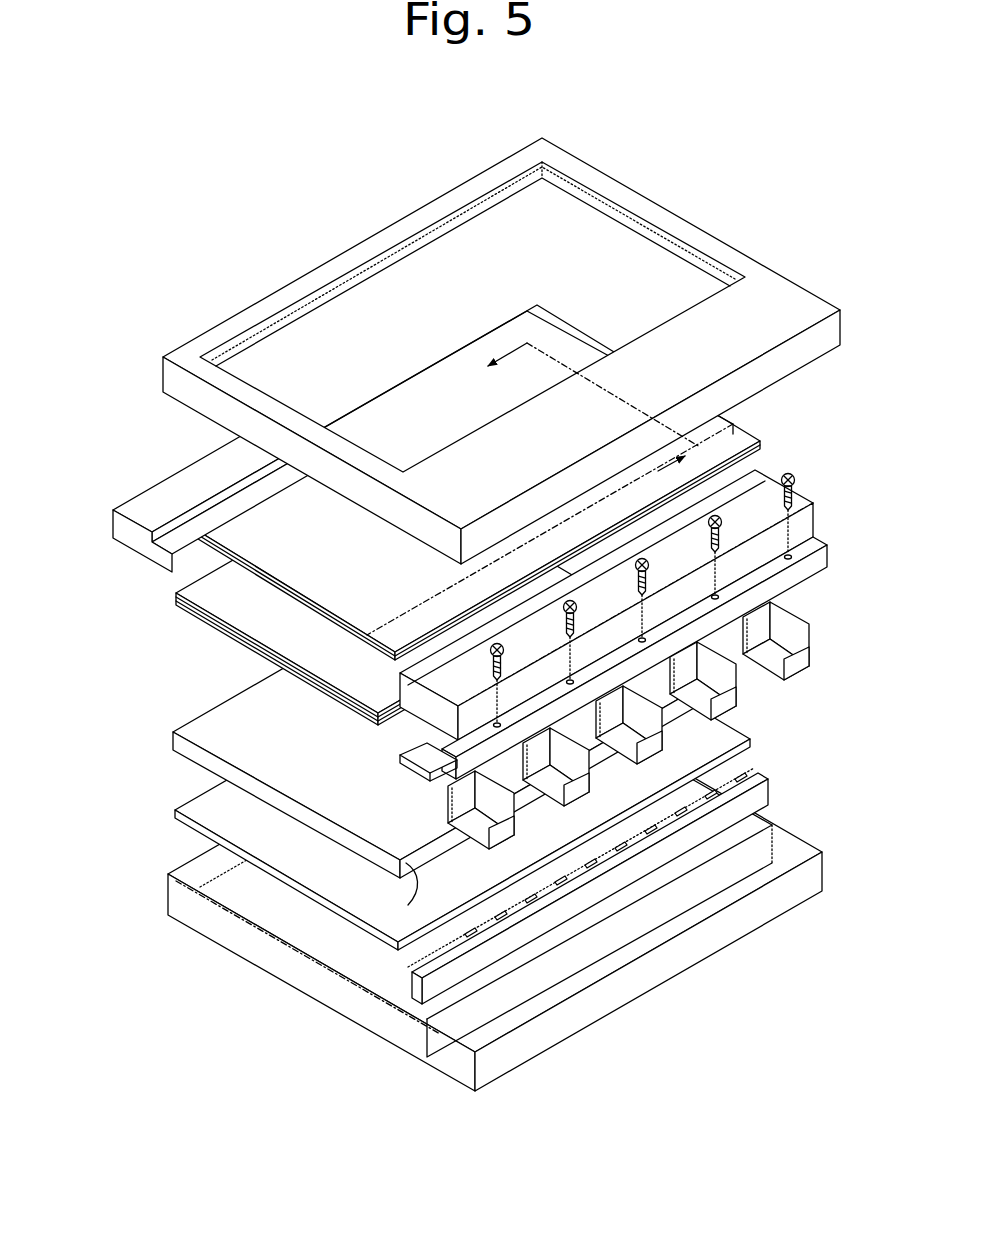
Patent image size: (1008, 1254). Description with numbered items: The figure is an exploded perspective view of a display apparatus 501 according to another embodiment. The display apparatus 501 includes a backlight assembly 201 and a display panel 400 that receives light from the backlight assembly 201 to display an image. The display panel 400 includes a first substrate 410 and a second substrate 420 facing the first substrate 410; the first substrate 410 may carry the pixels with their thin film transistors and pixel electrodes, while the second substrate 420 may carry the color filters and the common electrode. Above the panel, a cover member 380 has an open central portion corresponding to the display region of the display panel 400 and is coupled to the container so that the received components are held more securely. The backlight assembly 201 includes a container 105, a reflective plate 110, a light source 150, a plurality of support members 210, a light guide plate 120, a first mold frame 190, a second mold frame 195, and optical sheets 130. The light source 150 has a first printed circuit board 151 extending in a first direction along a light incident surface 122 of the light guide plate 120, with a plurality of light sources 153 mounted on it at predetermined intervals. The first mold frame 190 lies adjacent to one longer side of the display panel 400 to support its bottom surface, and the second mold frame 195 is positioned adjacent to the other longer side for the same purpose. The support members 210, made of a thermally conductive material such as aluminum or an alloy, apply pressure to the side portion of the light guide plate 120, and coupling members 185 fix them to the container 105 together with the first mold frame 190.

The display apparatus 501 is at (470, 605).
The cover member 380 is at (240, 318).
The display panel 400 is at (534, 482).
The first substrate 410 is at (745, 441).
The second substrate 420 is at (713, 437).
The coupling member 185 is at (800, 483).
The first mold frame 190 is at (800, 527).
The support members 210 is at (775, 652).
The second mold frame 195 is at (202, 500).
The optical sheets 130 is at (190, 578).
The light guide plate 120 is at (408, 763).
The light incident surface 122 is at (408, 905).
The reflective plate 110 is at (188, 797).
The container 105 is at (172, 870).
The light source 150 is at (652, 866).
The first printed circuit board 151 is at (760, 792).
The light sources 153 is at (727, 785).
The backlight assembly 201 is at (470, 698).